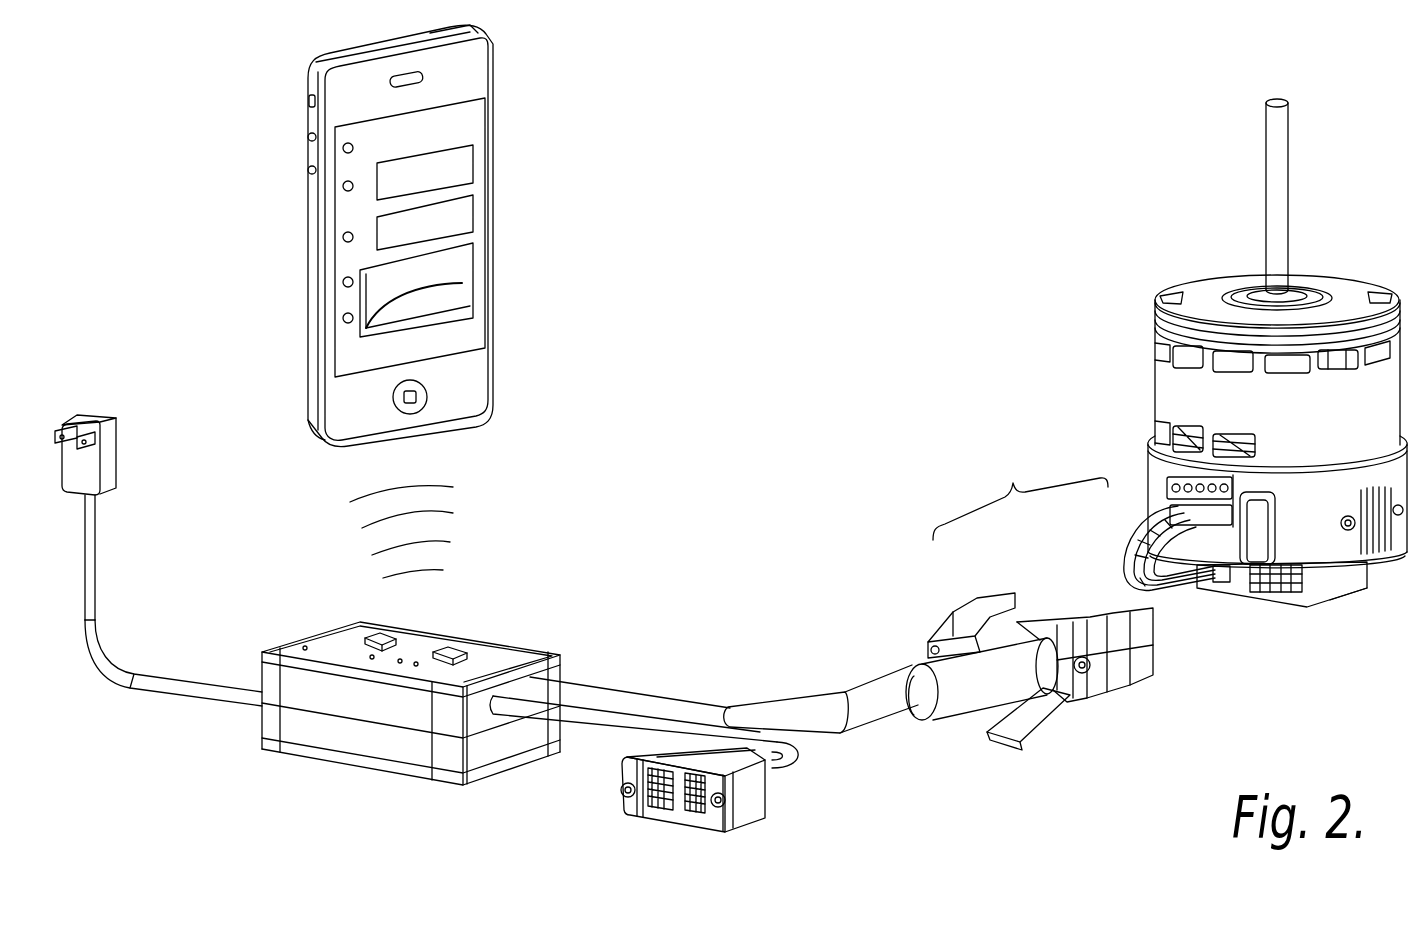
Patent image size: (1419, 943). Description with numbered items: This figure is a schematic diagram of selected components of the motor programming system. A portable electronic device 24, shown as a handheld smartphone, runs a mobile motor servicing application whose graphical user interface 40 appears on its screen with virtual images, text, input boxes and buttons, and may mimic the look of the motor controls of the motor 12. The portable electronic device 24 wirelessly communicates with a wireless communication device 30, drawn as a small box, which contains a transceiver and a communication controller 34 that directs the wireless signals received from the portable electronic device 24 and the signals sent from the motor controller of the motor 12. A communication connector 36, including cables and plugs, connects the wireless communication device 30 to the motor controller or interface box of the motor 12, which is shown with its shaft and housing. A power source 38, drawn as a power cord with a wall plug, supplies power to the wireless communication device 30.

The motor 12 is at (1135, 312).
The portable electronic device 24 is at (533, 92).
The wireless communication device 30 is at (438, 650).
The communication controller 34 is at (483, 650).
The communication connector 36 is at (625, 702).
The power source 38 is at (192, 686).
The graphical user interface 40 is at (350, 353).